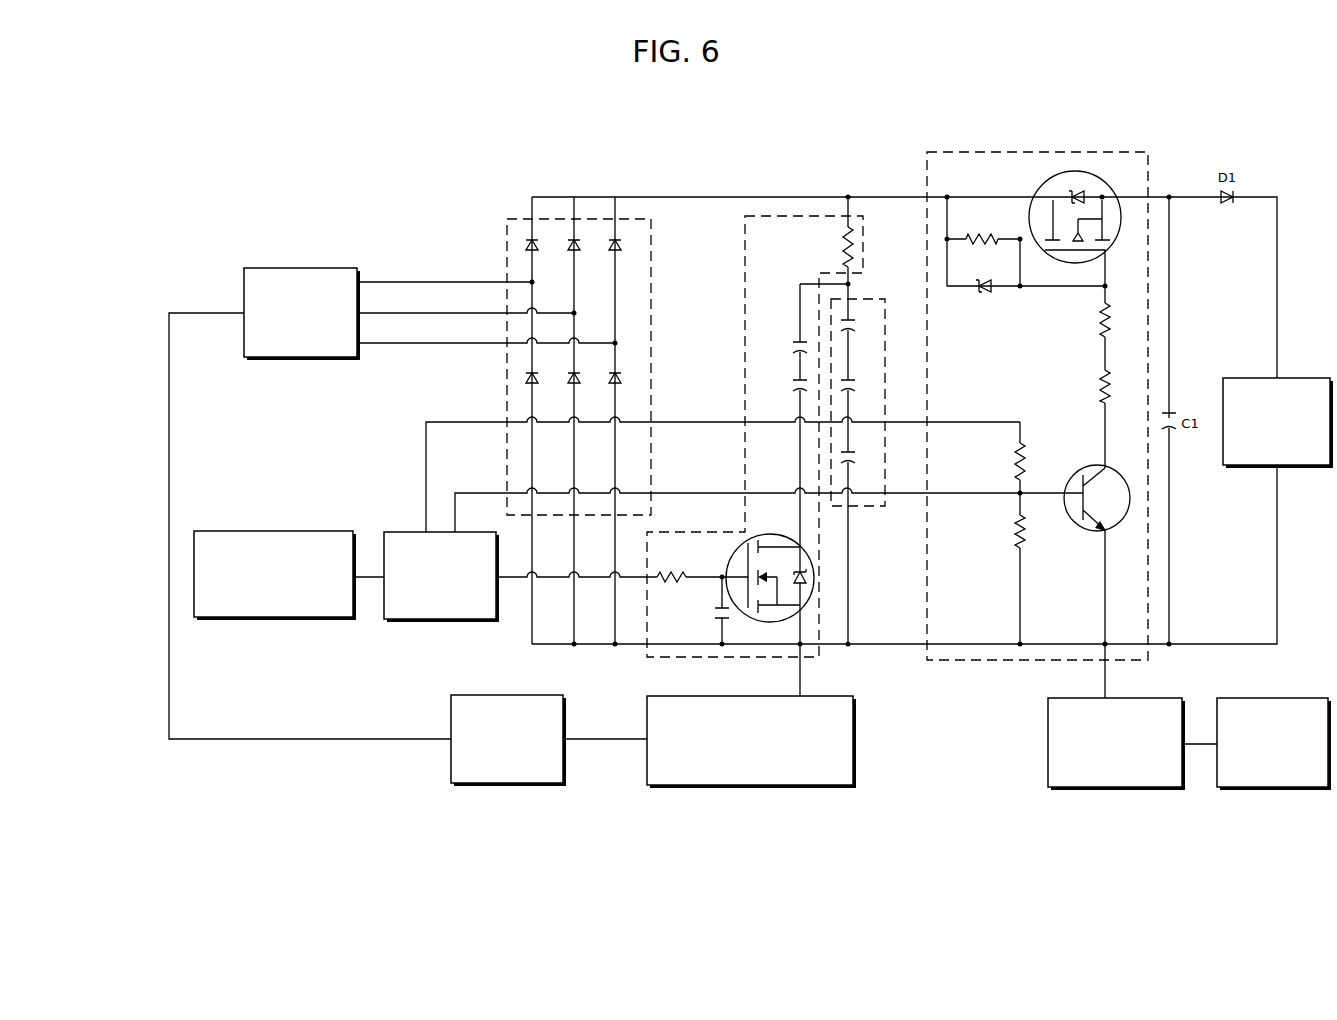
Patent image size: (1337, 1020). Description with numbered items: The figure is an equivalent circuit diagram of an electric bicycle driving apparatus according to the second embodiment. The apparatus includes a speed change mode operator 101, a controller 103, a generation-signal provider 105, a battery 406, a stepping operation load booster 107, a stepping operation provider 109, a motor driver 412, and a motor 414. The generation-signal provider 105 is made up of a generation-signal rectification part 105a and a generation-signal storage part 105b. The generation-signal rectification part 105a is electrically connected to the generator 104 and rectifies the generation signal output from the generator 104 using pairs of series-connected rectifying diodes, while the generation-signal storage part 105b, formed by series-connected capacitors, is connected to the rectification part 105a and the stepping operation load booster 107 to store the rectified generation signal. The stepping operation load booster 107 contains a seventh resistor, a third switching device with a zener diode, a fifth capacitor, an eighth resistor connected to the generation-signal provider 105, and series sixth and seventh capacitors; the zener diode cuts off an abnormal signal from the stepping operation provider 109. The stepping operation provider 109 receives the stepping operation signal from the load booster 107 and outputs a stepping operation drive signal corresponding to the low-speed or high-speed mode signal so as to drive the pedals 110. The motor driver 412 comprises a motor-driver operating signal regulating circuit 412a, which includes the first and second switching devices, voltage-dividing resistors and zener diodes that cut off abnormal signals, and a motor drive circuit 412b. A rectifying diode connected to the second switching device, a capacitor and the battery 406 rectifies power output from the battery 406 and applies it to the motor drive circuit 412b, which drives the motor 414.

The speed change mode operator 101 is at (295, 531).
The controller 103 is at (430, 622).
The generator 104 is at (328, 268).
The generation-signal provider 105 is at (925, 128).
The generation-signal rectification part 105a is at (633, 218).
The generation-signal storage part 105b is at (885, 320).
The stepping operation load booster 107 is at (745, 330).
The stepping operation provider 109 is at (757, 788).
The pedals 110 is at (507, 786).
The battery 406 is at (1312, 378).
The motor driver 412 is at (1179, 842).
The motor-driver operating signal regulating circuit 412a is at (967, 661).
The motor drive circuit 412b is at (1147, 790).
The motor 414 is at (1300, 790).